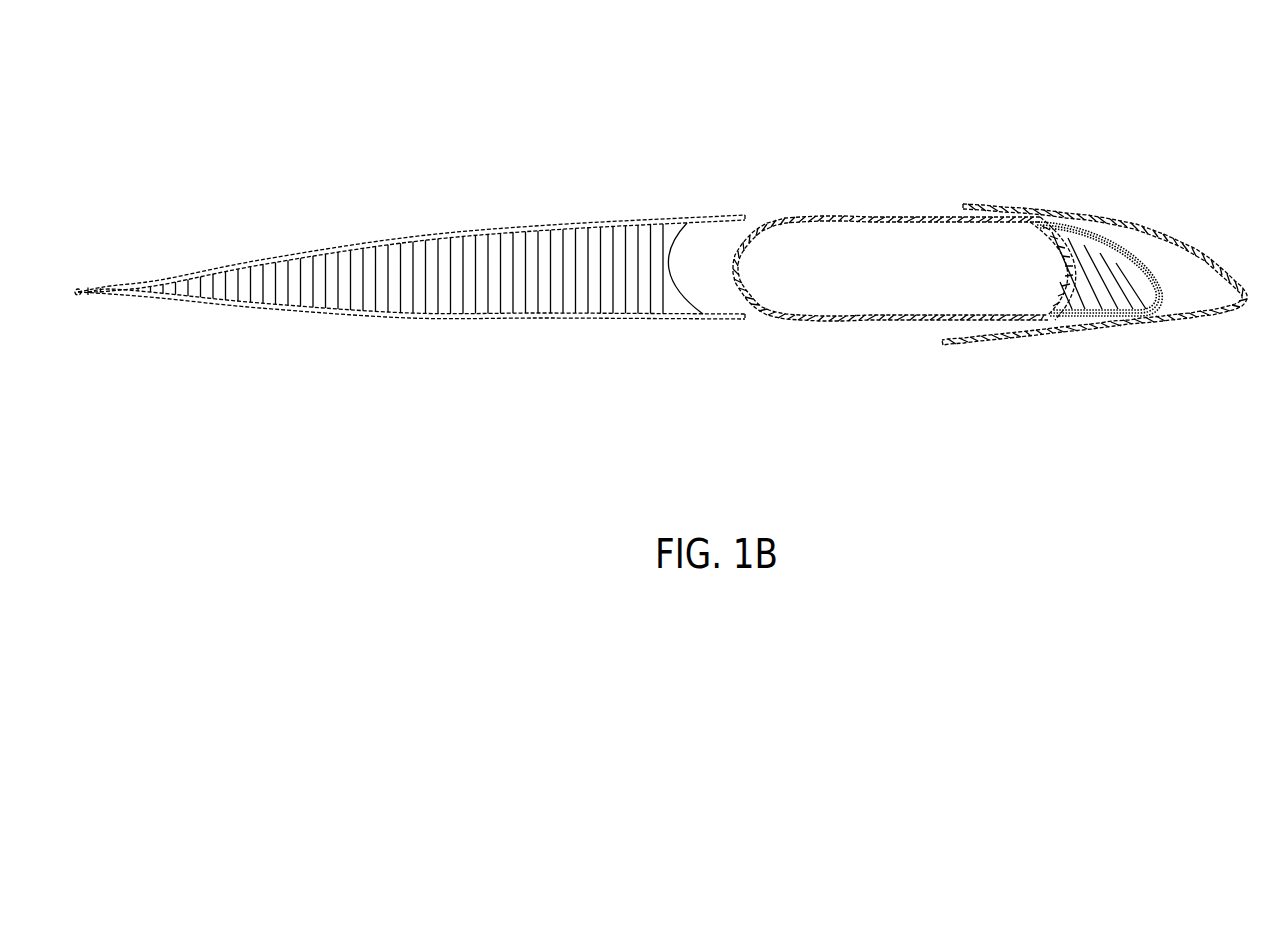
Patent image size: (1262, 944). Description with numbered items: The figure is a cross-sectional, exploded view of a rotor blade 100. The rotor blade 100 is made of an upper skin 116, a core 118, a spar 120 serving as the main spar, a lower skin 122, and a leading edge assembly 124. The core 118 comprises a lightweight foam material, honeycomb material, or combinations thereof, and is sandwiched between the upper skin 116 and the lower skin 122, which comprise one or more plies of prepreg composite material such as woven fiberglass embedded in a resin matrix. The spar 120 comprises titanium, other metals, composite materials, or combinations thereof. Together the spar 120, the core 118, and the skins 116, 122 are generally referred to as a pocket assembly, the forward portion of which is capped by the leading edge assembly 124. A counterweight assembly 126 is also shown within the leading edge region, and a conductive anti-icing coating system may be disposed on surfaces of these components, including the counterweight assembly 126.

The rotor blade 100 is at (902, 103).
The upper skin 116 is at (512, 237).
The core 118 is at (420, 257).
The spar 120 is at (832, 320).
The lower skin 122 is at (475, 320).
The leading edge assembly 124 is at (1187, 217).
The counterweight assembly 126 is at (1105, 238).